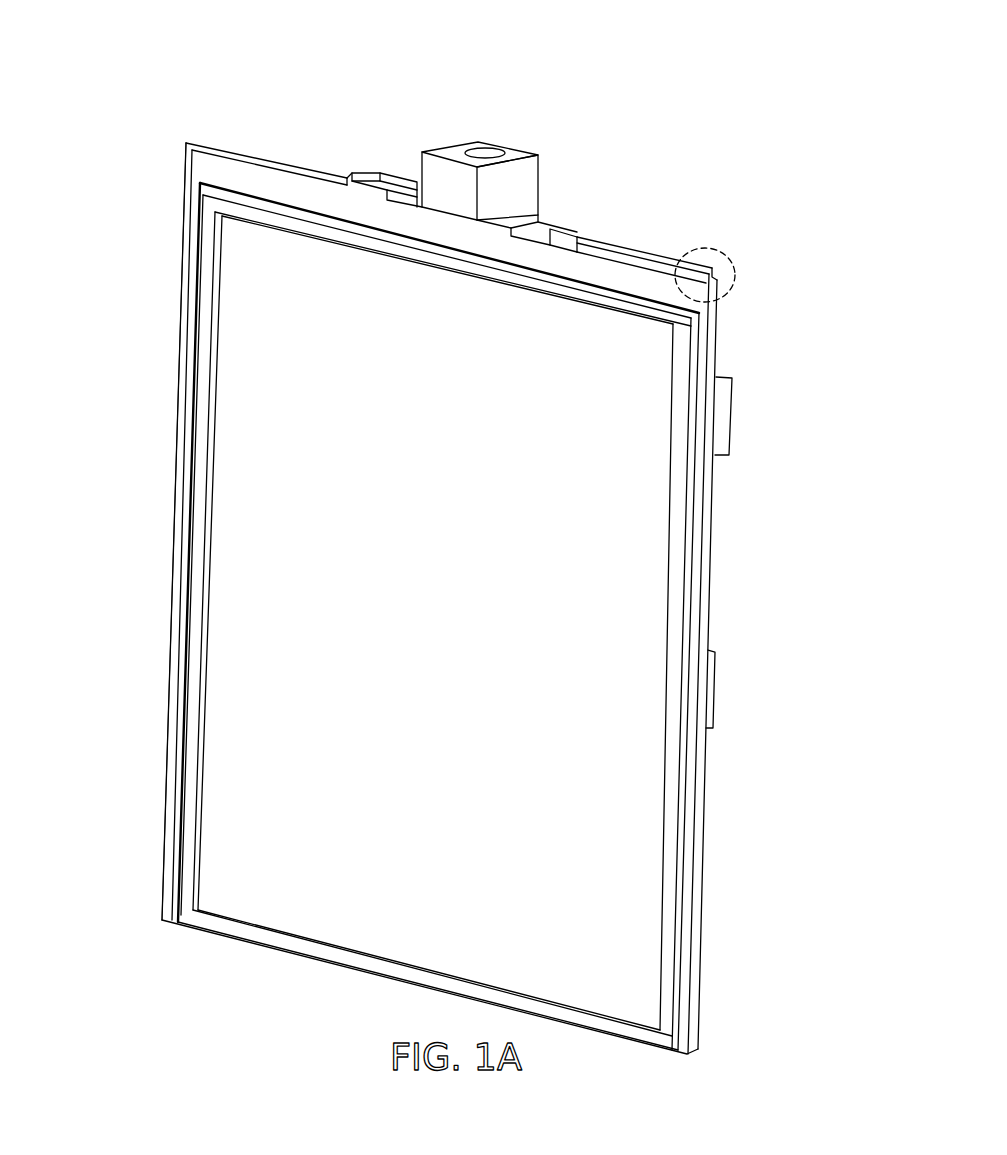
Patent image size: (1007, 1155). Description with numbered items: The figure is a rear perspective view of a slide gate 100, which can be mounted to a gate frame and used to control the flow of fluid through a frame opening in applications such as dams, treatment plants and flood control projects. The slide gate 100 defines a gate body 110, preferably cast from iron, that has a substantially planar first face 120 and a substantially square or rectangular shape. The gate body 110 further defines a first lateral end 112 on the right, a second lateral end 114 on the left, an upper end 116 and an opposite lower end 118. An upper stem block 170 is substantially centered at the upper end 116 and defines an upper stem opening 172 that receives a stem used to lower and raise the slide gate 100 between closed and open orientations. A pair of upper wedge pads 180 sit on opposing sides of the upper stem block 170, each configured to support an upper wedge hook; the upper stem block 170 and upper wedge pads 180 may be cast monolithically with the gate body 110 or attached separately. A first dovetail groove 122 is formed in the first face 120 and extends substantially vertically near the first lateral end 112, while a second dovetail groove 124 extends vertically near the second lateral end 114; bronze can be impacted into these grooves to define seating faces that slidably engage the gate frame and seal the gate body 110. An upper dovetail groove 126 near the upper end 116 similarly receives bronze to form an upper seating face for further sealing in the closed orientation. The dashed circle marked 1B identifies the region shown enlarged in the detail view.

The slide gate 100 is at (422, 527).
The gate body 110 is at (416, 561).
The first lateral end 112 is at (710, 563).
The second lateral end 114 is at (172, 566).
The upper end 116 is at (645, 265).
The lower end 118 is at (247, 942).
The first face 120 is at (588, 792).
The first dovetail groove 122 is at (690, 517).
The second dovetail groove 124 is at (183, 704).
The upper dovetail groove 126 is at (234, 196).
The upper stem block 170 is at (474, 144).
The upper stem opening 172 is at (486, 140).
The upper wedge pads 180 is at (388, 186).
The detail view reference 1B is at (727, 251).